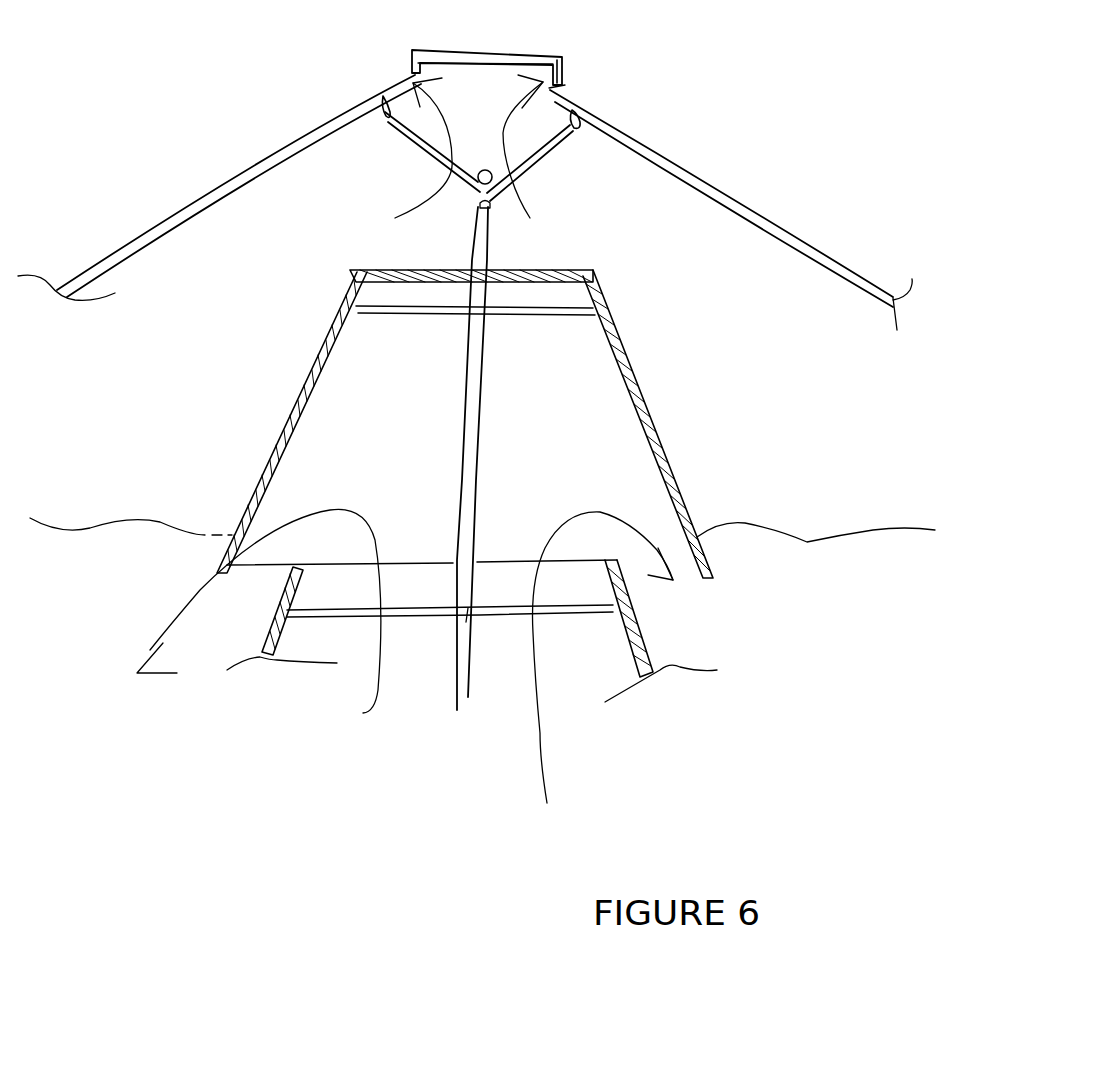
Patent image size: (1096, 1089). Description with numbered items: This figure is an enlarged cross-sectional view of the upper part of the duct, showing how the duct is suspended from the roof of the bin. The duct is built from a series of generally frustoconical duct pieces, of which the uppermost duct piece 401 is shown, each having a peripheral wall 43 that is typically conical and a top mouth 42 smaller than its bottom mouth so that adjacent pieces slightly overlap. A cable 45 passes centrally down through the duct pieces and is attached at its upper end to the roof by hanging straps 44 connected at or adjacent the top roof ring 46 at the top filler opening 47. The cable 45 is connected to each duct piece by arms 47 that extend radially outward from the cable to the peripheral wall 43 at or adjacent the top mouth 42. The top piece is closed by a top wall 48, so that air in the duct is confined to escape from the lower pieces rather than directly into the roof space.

The arms 47 is at (522, 58).
The top roof ring 46 is at (562, 68).
The hanging straps 44 is at (543, 143).
The top wall 48 is at (547, 263).
The duct piece 401 is at (663, 437).
The top mouth 42 is at (420, 565).
The cable 45 is at (477, 473).
The peripheral wall 43 is at (692, 588).